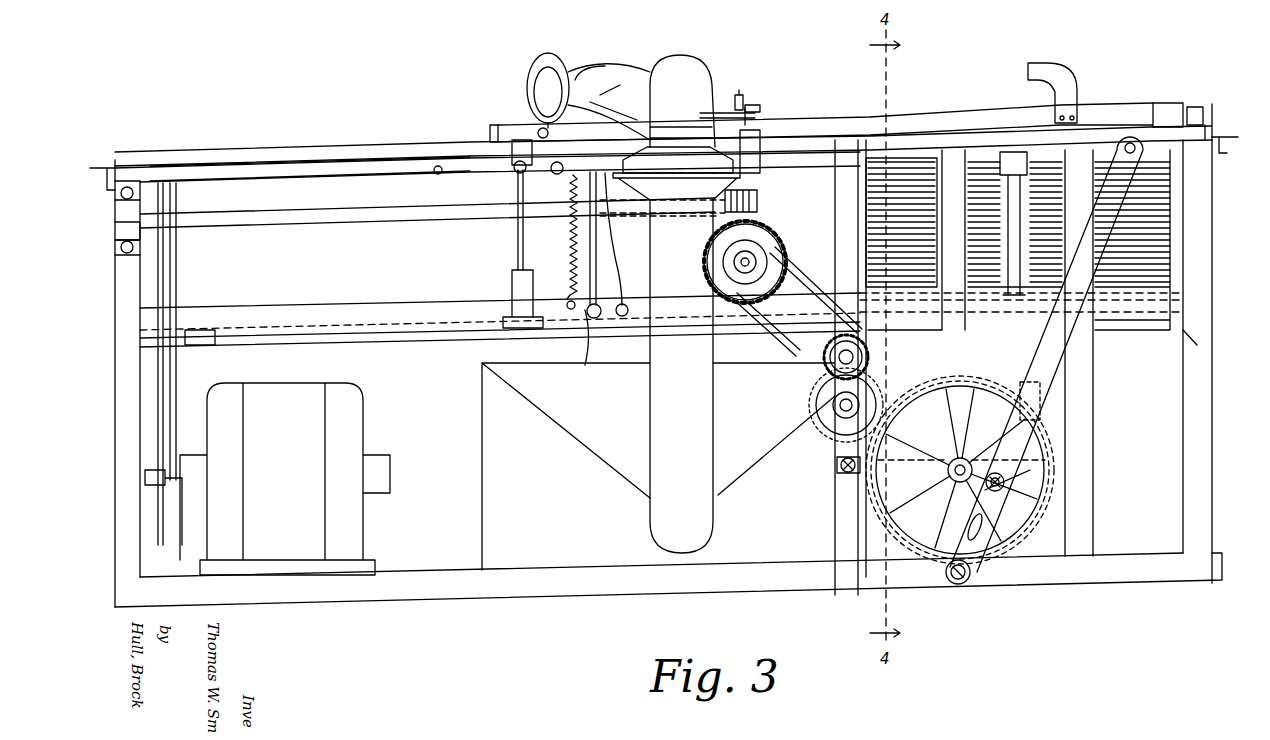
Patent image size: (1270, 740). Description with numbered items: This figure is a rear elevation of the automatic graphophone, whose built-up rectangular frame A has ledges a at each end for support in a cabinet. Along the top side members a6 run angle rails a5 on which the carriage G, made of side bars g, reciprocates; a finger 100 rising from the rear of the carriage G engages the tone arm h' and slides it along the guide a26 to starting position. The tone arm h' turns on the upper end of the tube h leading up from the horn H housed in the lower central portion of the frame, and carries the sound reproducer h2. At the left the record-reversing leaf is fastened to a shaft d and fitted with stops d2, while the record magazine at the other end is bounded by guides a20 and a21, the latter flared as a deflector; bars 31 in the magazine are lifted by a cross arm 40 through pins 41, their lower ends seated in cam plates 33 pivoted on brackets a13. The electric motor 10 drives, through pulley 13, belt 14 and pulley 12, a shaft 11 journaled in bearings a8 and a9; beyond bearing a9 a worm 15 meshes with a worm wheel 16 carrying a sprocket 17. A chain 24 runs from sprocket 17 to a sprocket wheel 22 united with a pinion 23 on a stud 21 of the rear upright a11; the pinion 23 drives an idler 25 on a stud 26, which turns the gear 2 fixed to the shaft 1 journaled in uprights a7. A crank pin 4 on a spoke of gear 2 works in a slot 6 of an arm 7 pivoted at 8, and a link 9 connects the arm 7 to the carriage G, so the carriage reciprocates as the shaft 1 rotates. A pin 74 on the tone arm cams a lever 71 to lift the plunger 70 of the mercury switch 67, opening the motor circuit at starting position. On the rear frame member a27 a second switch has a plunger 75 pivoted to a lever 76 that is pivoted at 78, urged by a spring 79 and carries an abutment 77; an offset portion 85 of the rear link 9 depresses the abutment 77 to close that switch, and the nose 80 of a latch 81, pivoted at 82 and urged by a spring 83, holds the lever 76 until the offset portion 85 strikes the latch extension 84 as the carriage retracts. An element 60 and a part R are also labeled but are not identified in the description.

The frame A is at (1209, 410).
The ledges a is at (107, 166).
The angle rails a5 is at (350, 151).
The top side members a6 is at (255, 163).
The uprights a7 is at (965, 357).
The bearing a8 is at (114, 232).
The bearing a9 is at (712, 212).
The upright member a11 is at (847, 248).
The brackets a13 is at (838, 472).
The guide a20 is at (1172, 243).
The guide a21 is at (866, 228).
The guide a26 is at (622, 88).
The rear longitudinal frame member a27 is at (396, 308).
The shaft 1 is at (948, 474).
The gear 2 is at (928, 390).
The crank pin 4 is at (1005, 492).
The slots 6 is at (985, 520).
The arms 7 is at (1046, 354).
The pivot 8 is at (965, 586).
The links 9 is at (998, 124).
The electric motor 10 is at (285, 479).
The shaft 11 is at (340, 222).
The pulley 12 is at (180, 250).
The pulley 13 is at (162, 492).
The belt 14 is at (172, 370).
The worm 15 is at (760, 201).
The worm wheel 16 is at (775, 245).
The sprocket 17 is at (770, 262).
The stud 21 is at (830, 380).
The sprocket wheel 22 is at (815, 365).
The pinion 23 is at (872, 352).
The chain 24 is at (785, 332).
The idler gear 25 is at (830, 420).
The stud 26 is at (832, 406).
The bars 31 is at (1020, 368).
The cam plates 33 is at (912, 455).
The cross arm 40 is at (1052, 402).
The pins 41 is at (1042, 378).
The cylinder 60 is at (512, 276).
The switch 67 is at (766, 170).
The plunger 70 is at (762, 110).
The lever 71 is at (748, 102).
The pin 74 is at (735, 110).
The plunger 75 is at (517, 235).
The lever 76 is at (536, 205).
The abutment 77 is at (490, 134).
The pivot 78 is at (560, 160).
The spring 79 is at (569, 240).
The nose 80 is at (612, 178).
The latch 81 is at (600, 228).
The pivot 82 is at (591, 349).
The spring 83 is at (612, 265).
The extension 84 is at (678, 160).
The offset portion 85 is at (607, 111).
The finger 100 is at (1066, 72).
The carriage G is at (945, 120).
The horn H is at (674, 367).
The rack R is at (905, 160).
The shaft d is at (440, 175).
The stops d2 is at (1005, 233).
The side bars g is at (1120, 110).
The tube h is at (681, 376).
The tone arm h' is at (696, 101).
The sound reproducer h2 is at (562, 75).